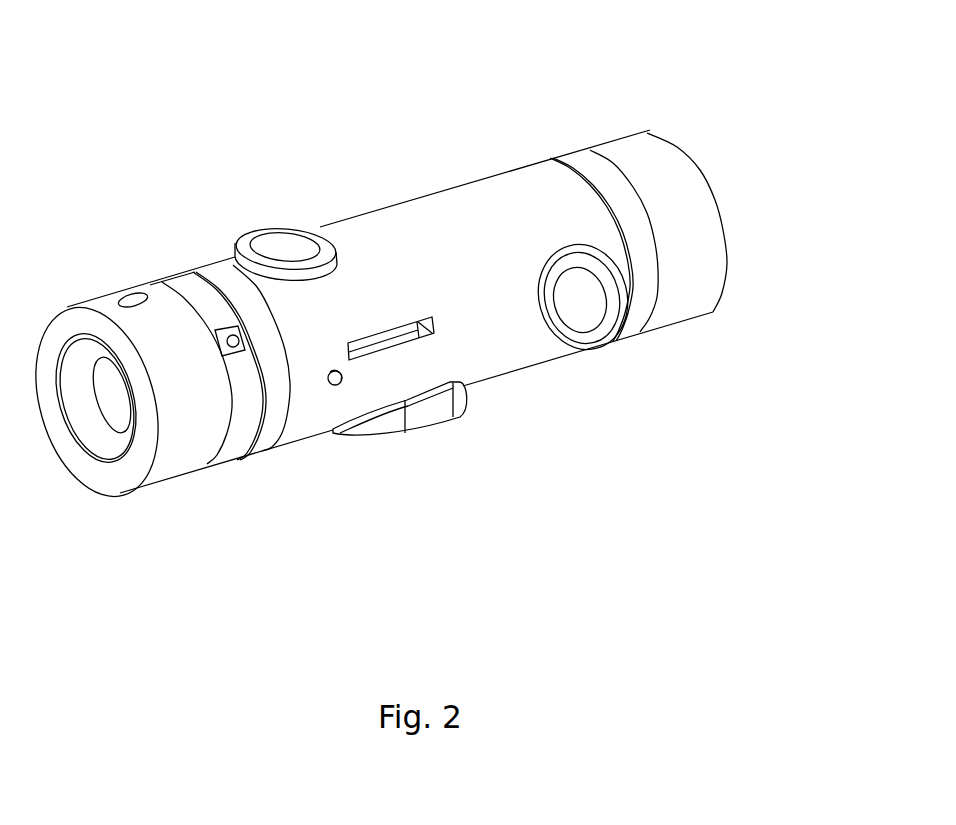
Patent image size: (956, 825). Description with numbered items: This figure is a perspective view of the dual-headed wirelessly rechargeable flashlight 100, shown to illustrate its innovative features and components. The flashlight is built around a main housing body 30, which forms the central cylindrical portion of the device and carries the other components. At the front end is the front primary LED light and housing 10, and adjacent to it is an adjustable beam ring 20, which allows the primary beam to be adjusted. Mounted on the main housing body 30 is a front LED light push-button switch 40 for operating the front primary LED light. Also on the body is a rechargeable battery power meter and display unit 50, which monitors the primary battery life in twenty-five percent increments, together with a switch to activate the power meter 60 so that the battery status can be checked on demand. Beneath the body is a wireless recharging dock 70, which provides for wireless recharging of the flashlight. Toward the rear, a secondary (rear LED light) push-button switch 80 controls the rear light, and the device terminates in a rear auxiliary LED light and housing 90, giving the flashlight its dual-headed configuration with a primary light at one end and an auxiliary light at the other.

The dual-headed wirelessly rechargeable flashlight 100 is at (663, 85).
The front primary LED light and housing 10 is at (179, 435).
The adjustable beam ring 20 is at (243, 425).
The main housing body 30 is at (462, 248).
The front LED light push-button switch 40 is at (282, 243).
The rechargeable battery power meter and display unit 50 is at (392, 337).
The switch to activate the power meter 60 is at (345, 394).
The wireless recharging dock 70 is at (425, 432).
The secondary (rear LED light) push-button switch 80 is at (580, 302).
The rear auxiliary LED light and housing 90 is at (692, 277).